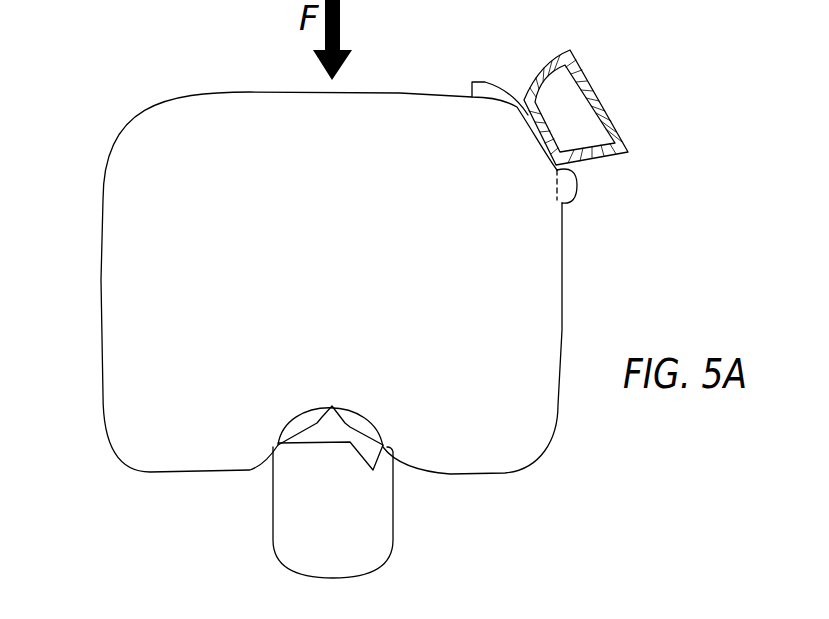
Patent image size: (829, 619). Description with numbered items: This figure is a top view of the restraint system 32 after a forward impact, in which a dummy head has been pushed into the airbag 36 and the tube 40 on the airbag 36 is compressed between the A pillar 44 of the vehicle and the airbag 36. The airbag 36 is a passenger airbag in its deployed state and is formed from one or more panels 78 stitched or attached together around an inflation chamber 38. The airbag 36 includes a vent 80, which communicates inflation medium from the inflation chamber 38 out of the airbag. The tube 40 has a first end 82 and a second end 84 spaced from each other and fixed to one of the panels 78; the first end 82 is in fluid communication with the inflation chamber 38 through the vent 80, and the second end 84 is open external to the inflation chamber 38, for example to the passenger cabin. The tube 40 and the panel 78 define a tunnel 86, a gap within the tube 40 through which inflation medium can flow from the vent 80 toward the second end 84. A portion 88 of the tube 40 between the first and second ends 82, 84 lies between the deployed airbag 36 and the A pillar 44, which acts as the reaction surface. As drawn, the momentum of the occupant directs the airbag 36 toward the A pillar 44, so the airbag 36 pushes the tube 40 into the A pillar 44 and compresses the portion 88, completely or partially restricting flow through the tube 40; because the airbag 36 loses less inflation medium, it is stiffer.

The restraint system 32 is at (74, 68).
The airbag 36 is at (100, 305).
The inflation chamber 38 is at (140, 368).
The tube 40 is at (577, 182).
The A pillar 44 is at (630, 153).
The panel 78 is at (558, 407).
The vent 80 is at (557, 183).
The first end 82 is at (563, 203).
The second end 84 is at (483, 80).
The tunnel 86 is at (557, 182).
The portion 88 is at (537, 132).